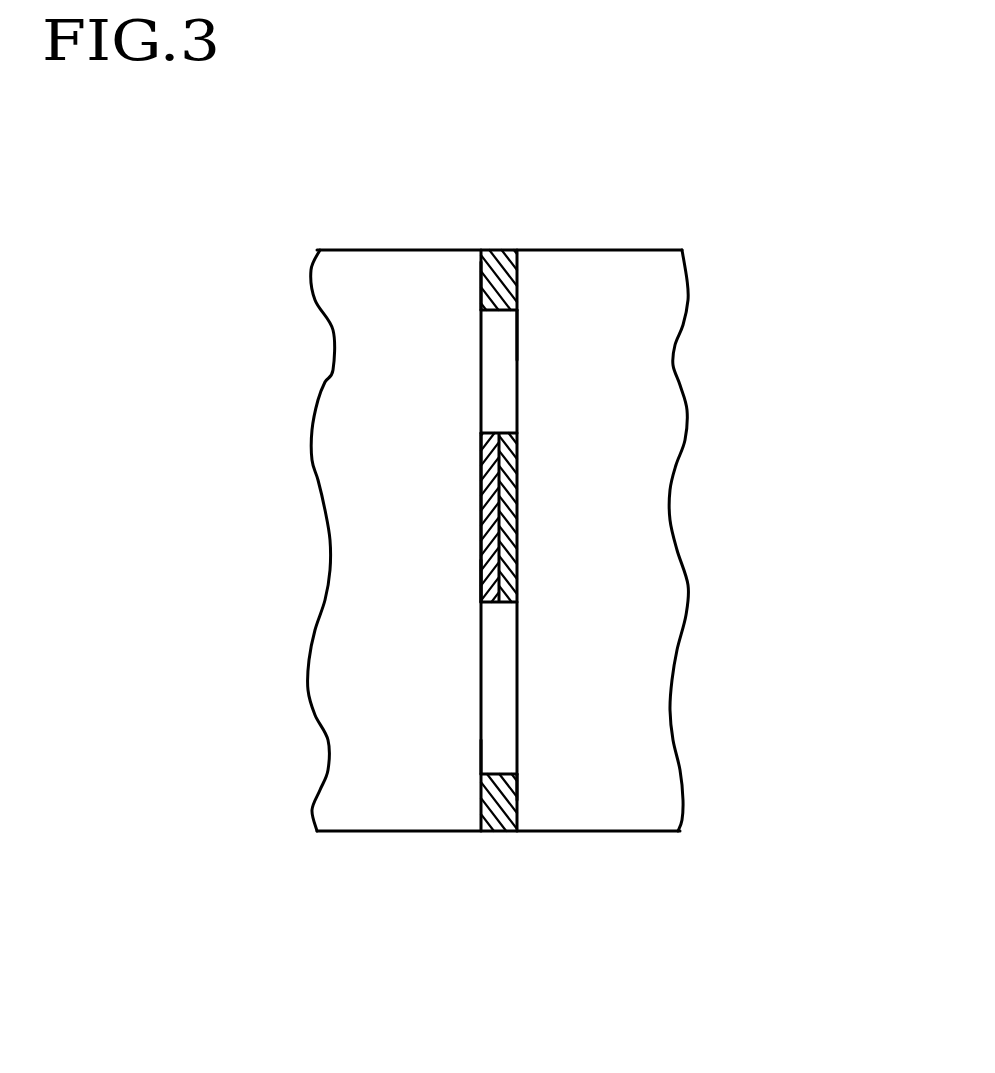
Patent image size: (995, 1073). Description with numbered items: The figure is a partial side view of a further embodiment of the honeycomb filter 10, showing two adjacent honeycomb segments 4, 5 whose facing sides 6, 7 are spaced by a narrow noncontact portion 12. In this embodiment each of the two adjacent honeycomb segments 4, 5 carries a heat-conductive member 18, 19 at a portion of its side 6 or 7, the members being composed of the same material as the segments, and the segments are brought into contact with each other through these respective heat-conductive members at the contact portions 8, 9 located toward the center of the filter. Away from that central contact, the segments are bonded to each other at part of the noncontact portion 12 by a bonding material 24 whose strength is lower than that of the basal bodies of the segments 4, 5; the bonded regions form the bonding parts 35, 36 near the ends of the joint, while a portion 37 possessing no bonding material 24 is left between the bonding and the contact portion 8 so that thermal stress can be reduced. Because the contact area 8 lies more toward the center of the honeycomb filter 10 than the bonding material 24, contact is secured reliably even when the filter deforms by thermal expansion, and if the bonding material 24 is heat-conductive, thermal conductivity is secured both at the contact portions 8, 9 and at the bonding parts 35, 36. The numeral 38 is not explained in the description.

The honeycomb filter 10 is at (790, 246).
The honeycomb segment 5 is at (318, 327).
The honeycomb segment 4 is at (657, 357).
The noncontact portion 12 is at (481, 337).
The side 6 is at (519, 692).
The bonding material 24 is at (490, 251).
The bonding part 36 is at (481, 276).
The portion possessing no bonding material 37 is at (519, 357).
The sealing surface 38 is at (481, 755).
The bonding part 35 is at (519, 798).
The heat-conductive member 18 is at (504, 433).
The contact portion 9 is at (481, 484).
The contact portion 8 is at (519, 482).
The side 7 is at (481, 544).
The heat-conductive member 19 is at (481, 576).